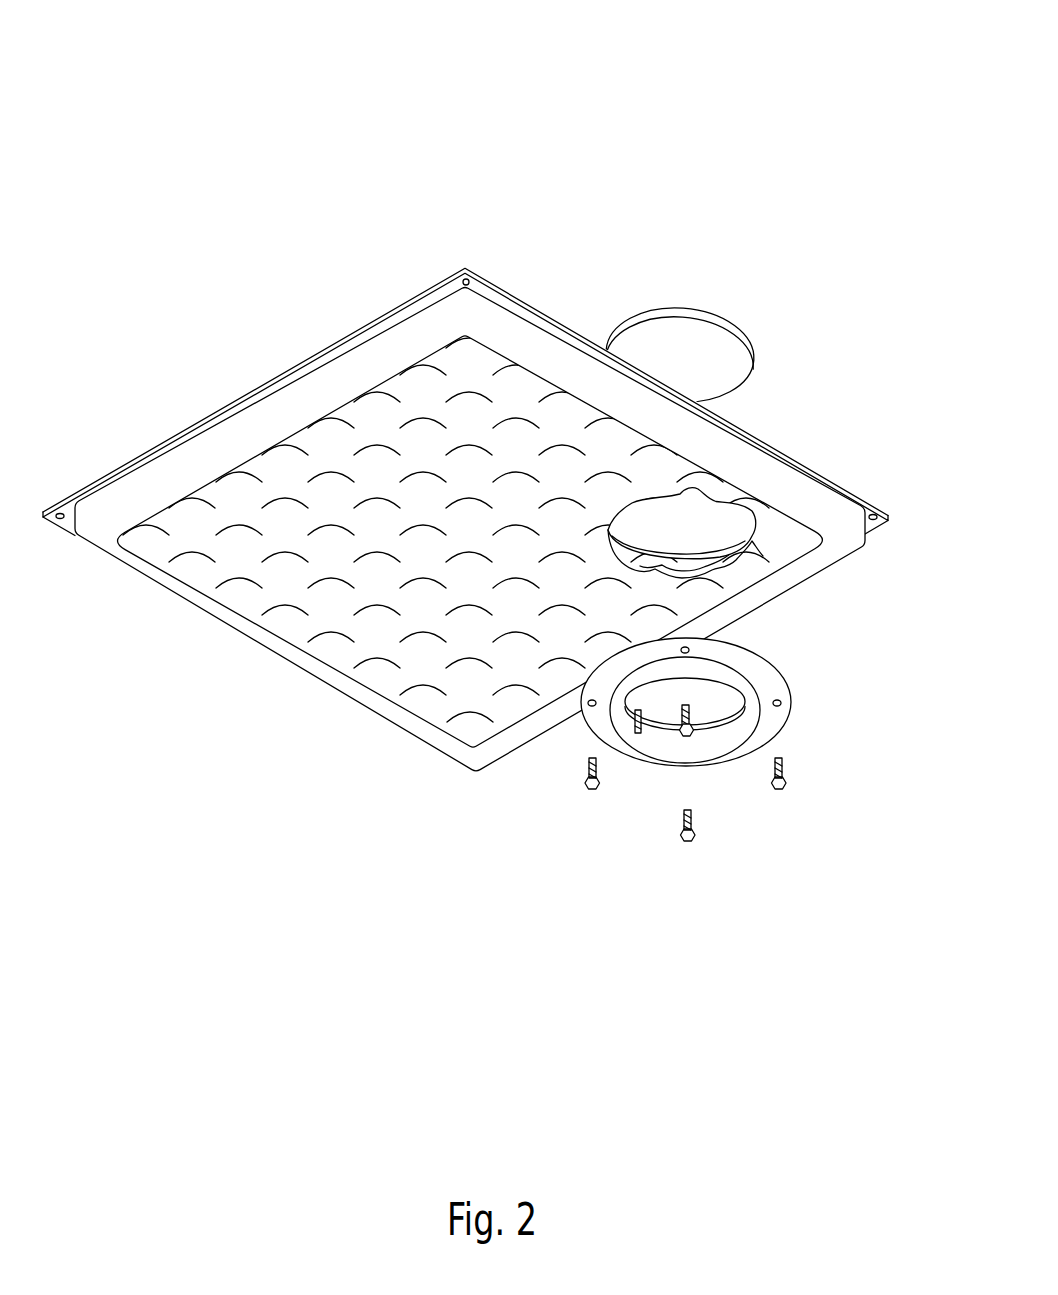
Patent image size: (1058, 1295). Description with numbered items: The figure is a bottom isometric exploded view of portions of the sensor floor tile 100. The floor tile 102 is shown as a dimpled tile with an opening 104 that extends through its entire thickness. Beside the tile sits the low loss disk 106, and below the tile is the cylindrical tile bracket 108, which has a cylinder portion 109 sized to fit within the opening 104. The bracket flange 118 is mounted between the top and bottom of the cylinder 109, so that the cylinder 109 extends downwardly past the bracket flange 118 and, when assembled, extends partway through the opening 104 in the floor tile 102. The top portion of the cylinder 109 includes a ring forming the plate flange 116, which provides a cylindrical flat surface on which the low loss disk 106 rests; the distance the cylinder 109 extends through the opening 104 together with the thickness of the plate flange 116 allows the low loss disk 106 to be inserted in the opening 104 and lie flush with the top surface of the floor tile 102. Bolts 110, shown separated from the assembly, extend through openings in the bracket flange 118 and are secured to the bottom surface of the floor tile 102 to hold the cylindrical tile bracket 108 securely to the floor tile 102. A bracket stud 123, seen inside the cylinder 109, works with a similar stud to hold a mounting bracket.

The sensor floor tile 100 is at (632, 60).
The floor tile 102 is at (214, 624).
The opening 104 is at (733, 517).
The low loss disk 106 is at (713, 312).
The cylindrical tile bracket 108 is at (708, 816).
The cylinder 109 is at (707, 748).
The bolts 110 is at (647, 855).
The plate flange 116 is at (740, 718).
The bracket flange 118 is at (717, 653).
The bracket stud 123 is at (638, 735).